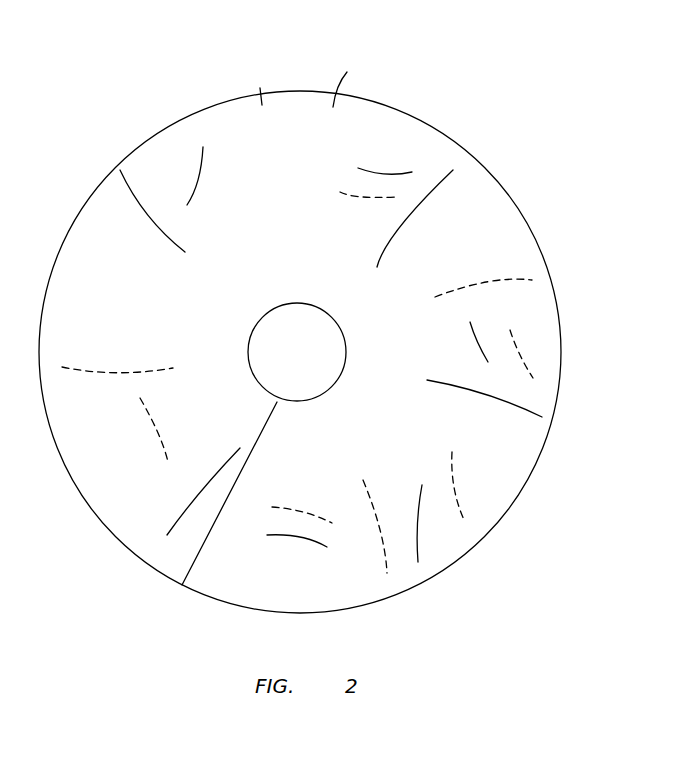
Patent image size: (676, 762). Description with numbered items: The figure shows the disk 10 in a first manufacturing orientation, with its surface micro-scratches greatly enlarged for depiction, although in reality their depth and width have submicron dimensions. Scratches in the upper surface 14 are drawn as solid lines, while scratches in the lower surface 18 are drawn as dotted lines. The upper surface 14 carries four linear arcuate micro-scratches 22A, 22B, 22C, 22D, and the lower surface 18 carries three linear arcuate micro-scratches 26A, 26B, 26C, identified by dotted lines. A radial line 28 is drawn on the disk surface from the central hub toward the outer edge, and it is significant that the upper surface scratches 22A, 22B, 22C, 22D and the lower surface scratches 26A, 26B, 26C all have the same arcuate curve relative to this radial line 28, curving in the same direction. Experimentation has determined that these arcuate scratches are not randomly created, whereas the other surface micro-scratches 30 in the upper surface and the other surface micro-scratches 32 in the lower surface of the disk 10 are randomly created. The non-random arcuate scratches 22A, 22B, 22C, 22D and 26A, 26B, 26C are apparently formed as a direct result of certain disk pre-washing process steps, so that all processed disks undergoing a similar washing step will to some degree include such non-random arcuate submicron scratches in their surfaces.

The disk 10 is at (138, 93).
The upper surface 14 is at (353, 79).
The lower surface 18 is at (260, 90).
The linear arcuate micro-scratch 22A is at (415, 210).
The linear arcuate micro-scratch 22B is at (485, 397).
The linear arcuate micro-scratch 22C is at (187, 516).
The linear arcuate micro-scratch 22D is at (148, 215).
The linear arcuate micro-scratch 26A is at (488, 280).
The linear arcuate micro-scratch 26B is at (384, 561).
The linear arcuate micro-scratch 26C is at (117, 370).
The radial line 28 is at (193, 560).
The surface micro-scratches 30 is at (200, 177).
The surface micro-scratches 32 is at (353, 197).